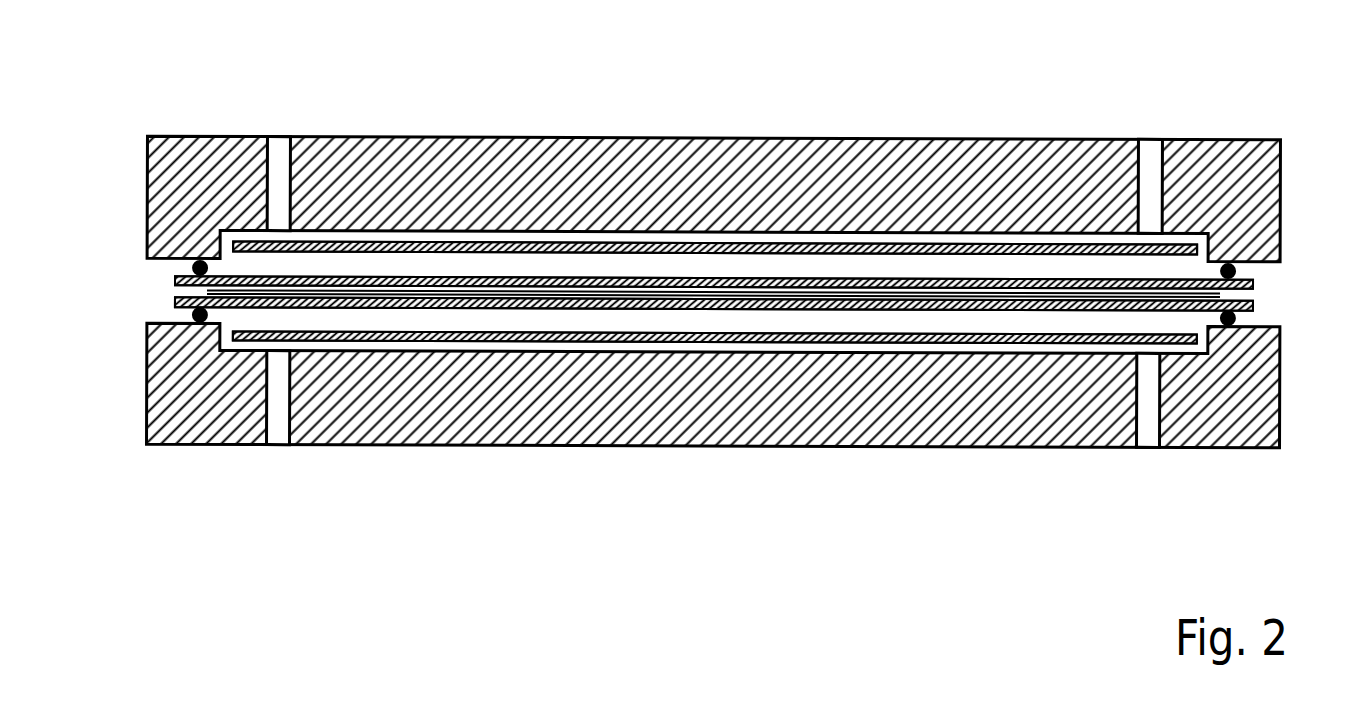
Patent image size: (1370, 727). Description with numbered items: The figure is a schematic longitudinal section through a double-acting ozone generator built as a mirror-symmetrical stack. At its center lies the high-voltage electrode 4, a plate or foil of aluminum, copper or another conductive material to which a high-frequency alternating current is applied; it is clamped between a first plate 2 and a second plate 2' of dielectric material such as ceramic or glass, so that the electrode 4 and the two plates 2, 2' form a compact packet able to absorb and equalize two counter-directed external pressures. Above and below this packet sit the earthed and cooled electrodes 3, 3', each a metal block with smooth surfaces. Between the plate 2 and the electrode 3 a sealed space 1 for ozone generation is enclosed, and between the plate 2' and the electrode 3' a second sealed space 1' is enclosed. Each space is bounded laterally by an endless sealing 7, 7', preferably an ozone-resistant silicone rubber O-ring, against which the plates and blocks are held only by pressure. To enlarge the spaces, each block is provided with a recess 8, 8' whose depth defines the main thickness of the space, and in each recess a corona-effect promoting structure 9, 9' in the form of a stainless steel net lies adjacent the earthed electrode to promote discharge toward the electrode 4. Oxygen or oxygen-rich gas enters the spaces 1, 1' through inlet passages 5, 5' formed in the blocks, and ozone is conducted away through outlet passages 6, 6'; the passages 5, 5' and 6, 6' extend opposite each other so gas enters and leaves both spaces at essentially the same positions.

The sealed space 1 is at (714, 421).
The second sealed space 1' is at (714, 164).
The plate of dielectric material 2 is at (714, 421).
The second plate of dielectric material 2' is at (714, 164).
The earthed and cooled electrode 3 is at (713, 434).
The second earthed and cooled electrode 3' is at (713, 151).
The electrode 4 is at (797, 295).
The inlet passage 5 is at (1145, 449).
The inlet passage 5' is at (1150, 136).
The outlet passage 6 is at (274, 448).
The outlet passage 6' is at (275, 135).
The endless sealing 7 is at (1289, 304).
The endless sealing 7' is at (141, 287).
The recess 8 is at (715, 438).
The recess 8' is at (715, 147).
The corona-effect promoting structure 9 is at (715, 438).
The corona-effect promoting structure 9' is at (715, 147).